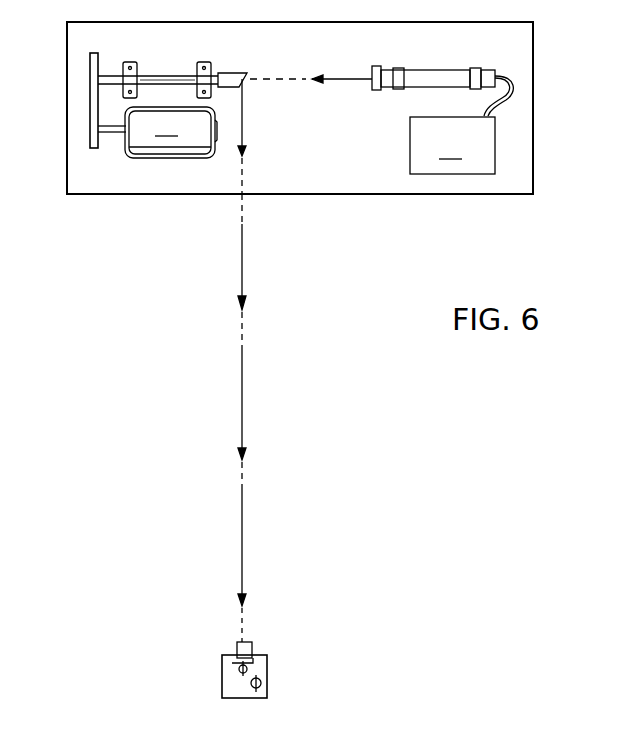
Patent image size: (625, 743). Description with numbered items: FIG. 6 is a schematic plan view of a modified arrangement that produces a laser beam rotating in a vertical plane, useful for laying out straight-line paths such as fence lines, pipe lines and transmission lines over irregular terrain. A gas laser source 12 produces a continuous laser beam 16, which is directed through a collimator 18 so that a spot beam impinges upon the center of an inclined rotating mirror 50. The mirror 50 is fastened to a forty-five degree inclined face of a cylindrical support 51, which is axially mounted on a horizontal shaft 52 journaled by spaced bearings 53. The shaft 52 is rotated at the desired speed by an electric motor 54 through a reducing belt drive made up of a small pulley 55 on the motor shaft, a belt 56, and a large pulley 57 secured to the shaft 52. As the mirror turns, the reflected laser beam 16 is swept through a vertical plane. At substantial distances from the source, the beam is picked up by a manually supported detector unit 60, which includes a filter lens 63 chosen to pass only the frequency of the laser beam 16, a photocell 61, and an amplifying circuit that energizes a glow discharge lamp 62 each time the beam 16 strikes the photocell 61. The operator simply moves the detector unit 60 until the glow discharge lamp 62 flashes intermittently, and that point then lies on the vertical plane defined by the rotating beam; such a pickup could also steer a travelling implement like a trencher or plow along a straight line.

The gas laser source 12 is at (452, 145).
The laser beam 16 is at (341, 79).
The collimator 18 is at (429, 77).
The inclined rotating mirror 50 is at (248, 75).
The cylindrical support 51 is at (226, 72).
The horizontal shaft 52 is at (172, 78).
The spaced bearings 53 is at (131, 73).
The electric motor 54 is at (171, 132).
The small pulley 55 is at (91, 132).
The belt 56 is at (93, 110).
The large pulley 57 is at (88, 90).
The detector unit 60 is at (232, 688).
The photocell 61 is at (236, 668).
The glow discharge lamp 62 is at (262, 682).
The filter lens 63 is at (250, 660).